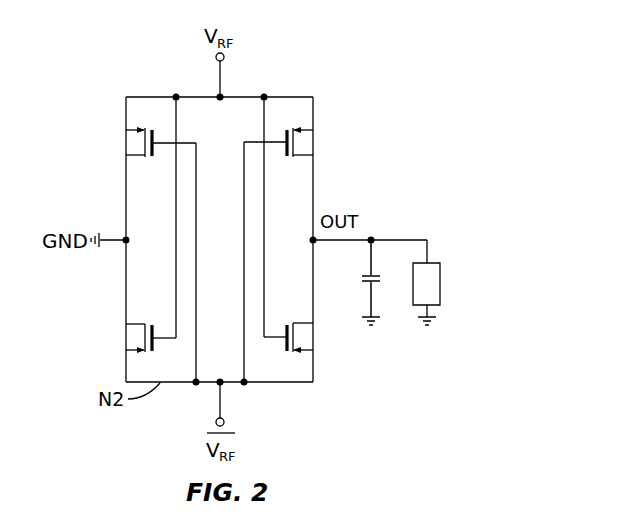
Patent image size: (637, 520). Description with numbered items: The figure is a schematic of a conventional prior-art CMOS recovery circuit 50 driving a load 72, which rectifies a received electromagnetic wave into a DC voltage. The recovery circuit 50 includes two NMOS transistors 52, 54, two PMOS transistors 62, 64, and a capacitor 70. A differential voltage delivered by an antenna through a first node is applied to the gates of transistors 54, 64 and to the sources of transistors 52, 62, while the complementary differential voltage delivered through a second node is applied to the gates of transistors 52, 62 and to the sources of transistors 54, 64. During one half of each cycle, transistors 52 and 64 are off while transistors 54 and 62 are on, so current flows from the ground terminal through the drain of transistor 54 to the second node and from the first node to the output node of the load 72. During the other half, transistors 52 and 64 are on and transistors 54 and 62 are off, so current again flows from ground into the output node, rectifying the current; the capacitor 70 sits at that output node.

The CMOS recovery circuit 50 is at (406, 90).
The NMOS transistor 52 is at (138, 143).
The NMOS transistor 54 is at (134, 340).
The PMOS transistor 62 is at (302, 142).
The PMOS transistor 64 is at (302, 338).
The capacitor 70 is at (362, 277).
The load 72 is at (443, 282).